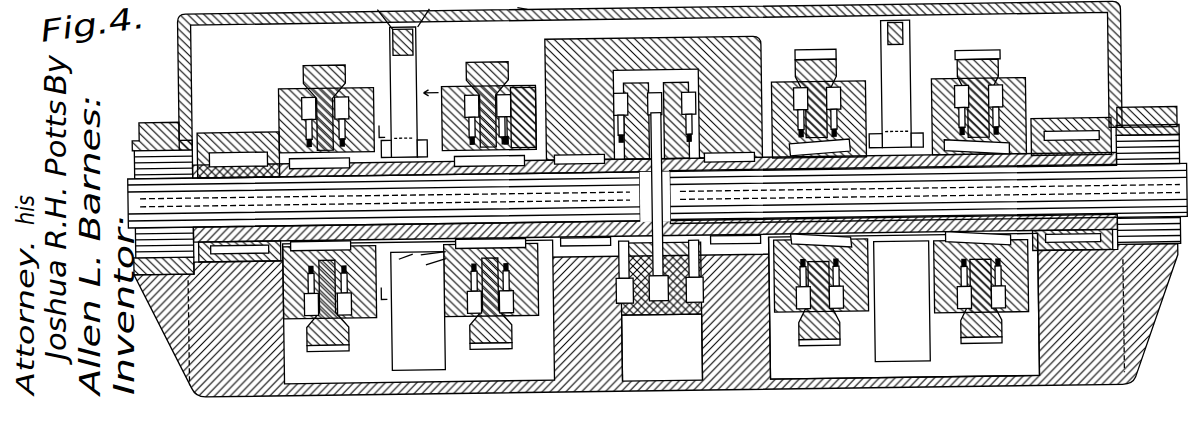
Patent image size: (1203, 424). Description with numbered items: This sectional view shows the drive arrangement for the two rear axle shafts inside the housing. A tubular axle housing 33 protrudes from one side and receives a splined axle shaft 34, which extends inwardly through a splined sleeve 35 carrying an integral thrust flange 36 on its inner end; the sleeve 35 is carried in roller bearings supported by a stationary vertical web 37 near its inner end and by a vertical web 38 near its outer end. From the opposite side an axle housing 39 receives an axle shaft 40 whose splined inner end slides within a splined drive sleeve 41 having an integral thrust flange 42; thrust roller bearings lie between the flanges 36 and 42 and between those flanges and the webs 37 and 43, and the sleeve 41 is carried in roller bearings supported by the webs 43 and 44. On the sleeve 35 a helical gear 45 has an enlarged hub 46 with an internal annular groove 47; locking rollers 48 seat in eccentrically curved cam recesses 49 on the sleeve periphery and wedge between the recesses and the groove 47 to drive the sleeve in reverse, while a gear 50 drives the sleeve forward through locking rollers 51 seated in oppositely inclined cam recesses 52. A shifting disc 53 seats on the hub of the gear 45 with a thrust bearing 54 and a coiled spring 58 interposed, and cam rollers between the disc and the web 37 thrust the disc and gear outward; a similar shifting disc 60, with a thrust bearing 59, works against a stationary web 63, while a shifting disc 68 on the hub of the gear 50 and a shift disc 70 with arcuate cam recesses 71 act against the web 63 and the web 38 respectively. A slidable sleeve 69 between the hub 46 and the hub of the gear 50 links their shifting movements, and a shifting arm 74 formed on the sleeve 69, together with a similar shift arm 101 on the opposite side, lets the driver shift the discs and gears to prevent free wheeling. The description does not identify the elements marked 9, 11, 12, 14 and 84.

The bracket 9 is at (389, 212).
The shift rod 11 is at (514, 6).
The shift rod 12 is at (425, 13).
The direction of movement 14 is at (431, 197).
The tubular axle housing 33 is at (140, 122).
The axle shaft 34 is at (384, 200).
The splined sleeve 35 is at (170, 150).
The thrust flange 36 is at (634, 89).
The vertical web 37 is at (612, 376).
The vertical web 38 is at (310, 373).
The axle housing 39 is at (1165, 122).
The axle shaft 40 is at (929, 193).
The splined drive sleeve 41 is at (1135, 148).
The thrust flange 42 is at (672, 89).
The vertical web 43 is at (710, 376).
The vertical web 44 is at (1040, 368).
The helical gear 45 is at (488, 66).
The hub 46 is at (504, 99).
The internal annular groove 47 is at (429, 261).
The locking rollers 48 is at (428, 272).
The cam recesses 49 is at (402, 262).
The gear 50 is at (328, 67).
The locking rollers 51 is at (280, 135).
The cam recesses 52 is at (236, 140).
The shifting disc 53 is at (516, 92).
The thrust bearing 54 is at (510, 80).
The coiled spring 58 is at (512, 135).
The thrust bearing 59 is at (470, 99).
The shifting disc 60 is at (446, 90).
The web 63 is at (418, 311).
The shifting disc 68 is at (352, 99).
The sleeve 69 is at (424, 143).
The shift disc 70 is at (292, 90).
The cam recesses 71 is at (377, 15).
The shifting arm 74 is at (404, 92).
The collar 84 is at (395, 58).
The shift arm 101 is at (912, 65).